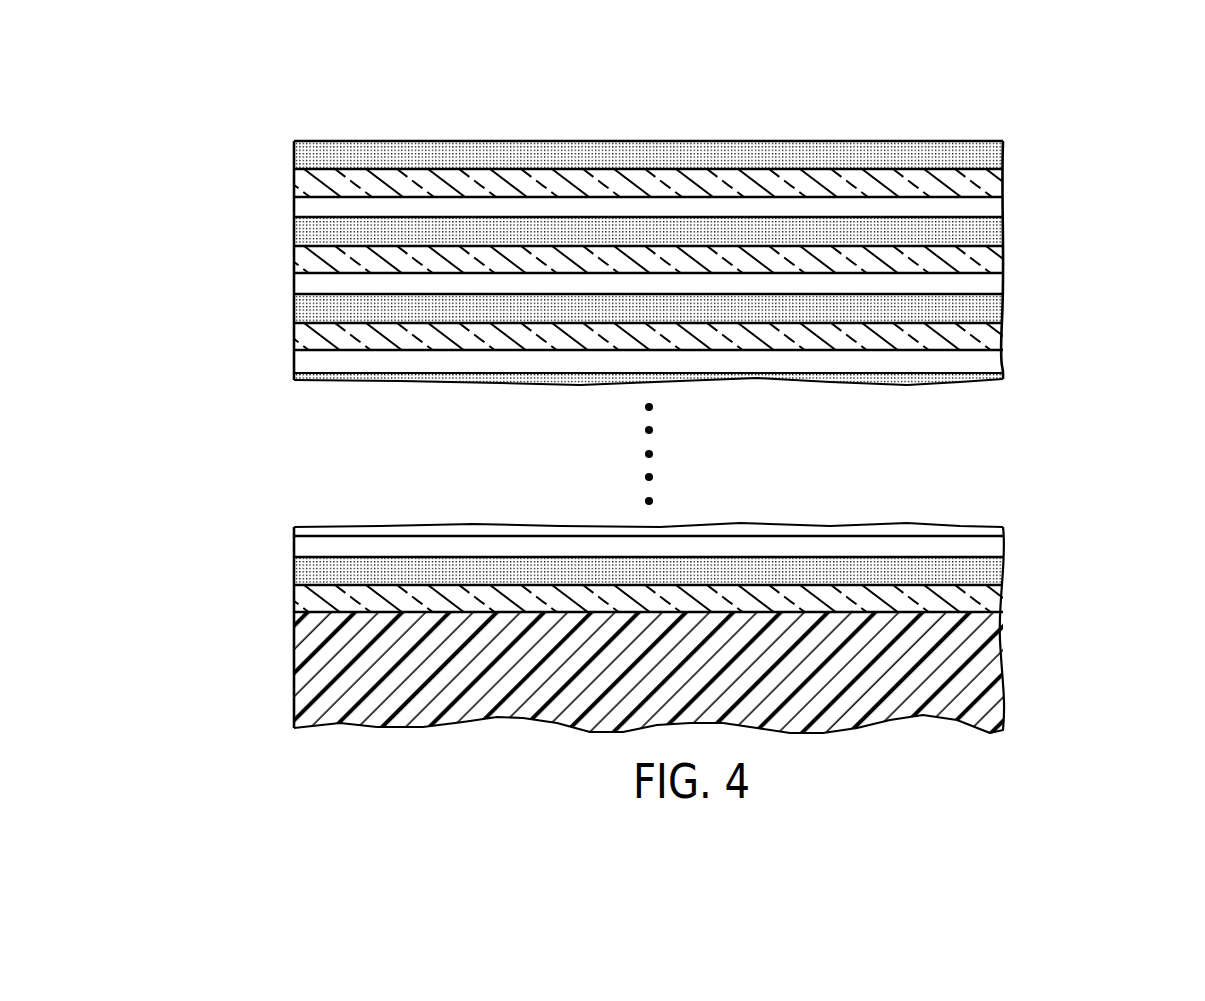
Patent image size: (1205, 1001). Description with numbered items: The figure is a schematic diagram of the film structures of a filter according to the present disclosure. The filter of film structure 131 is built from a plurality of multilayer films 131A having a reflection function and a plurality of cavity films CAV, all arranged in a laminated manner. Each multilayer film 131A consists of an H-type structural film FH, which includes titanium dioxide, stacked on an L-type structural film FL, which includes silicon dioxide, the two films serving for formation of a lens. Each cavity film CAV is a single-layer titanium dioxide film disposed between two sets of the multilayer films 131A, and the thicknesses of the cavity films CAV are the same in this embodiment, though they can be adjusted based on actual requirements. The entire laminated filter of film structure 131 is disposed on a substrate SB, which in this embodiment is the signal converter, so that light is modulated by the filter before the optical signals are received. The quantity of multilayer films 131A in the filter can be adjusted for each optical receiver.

The filter of film structure 131 is at (312, 116).
The multilayer film 131A is at (739, 378).
The H-type structural film FH is at (992, 157).
The L-type structural film FL is at (992, 180).
The cavity film CAV is at (302, 206).
The substrate SB is at (980, 667).